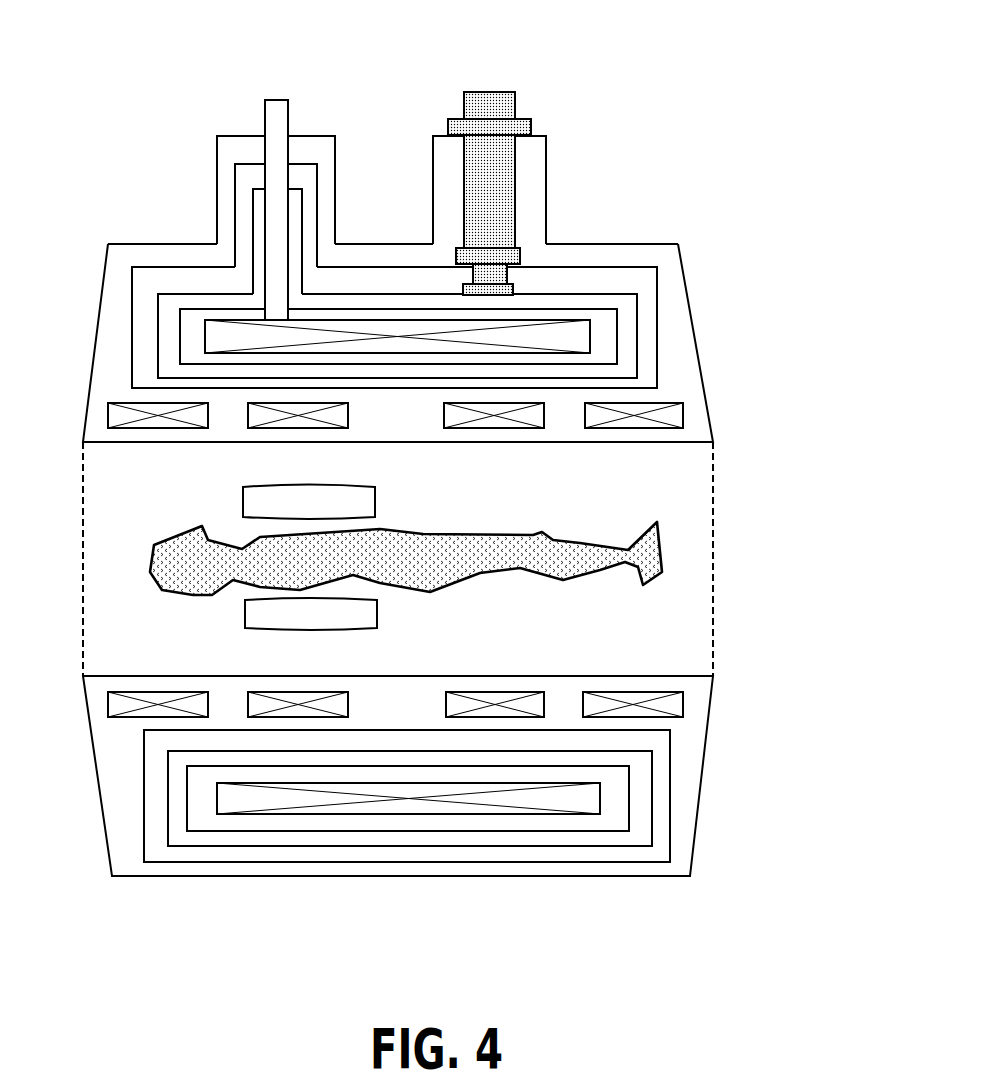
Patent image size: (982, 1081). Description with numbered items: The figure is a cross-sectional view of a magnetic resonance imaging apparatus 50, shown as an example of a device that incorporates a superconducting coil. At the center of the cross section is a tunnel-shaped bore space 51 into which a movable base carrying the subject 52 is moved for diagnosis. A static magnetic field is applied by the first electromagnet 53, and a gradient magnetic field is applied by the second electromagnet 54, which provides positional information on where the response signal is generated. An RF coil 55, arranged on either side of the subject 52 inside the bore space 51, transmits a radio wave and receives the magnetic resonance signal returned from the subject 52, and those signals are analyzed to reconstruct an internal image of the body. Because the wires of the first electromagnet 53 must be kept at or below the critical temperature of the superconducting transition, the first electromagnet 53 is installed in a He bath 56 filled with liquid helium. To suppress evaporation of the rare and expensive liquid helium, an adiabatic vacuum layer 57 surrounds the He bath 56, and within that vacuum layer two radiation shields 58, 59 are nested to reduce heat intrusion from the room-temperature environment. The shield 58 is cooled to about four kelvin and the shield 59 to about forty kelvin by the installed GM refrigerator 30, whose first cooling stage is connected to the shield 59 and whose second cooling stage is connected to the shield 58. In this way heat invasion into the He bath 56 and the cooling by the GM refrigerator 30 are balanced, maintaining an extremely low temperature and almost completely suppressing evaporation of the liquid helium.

The MRI apparatus 50 is at (145, 79).
The GM refrigerator 30 is at (517, 170).
The bore space 51 is at (157, 492).
The subject 52 is at (204, 527).
The first electromagnet 53 is at (590, 337).
The second electromagnet 54 is at (683, 417).
The RF coil 55 is at (375, 500).
The He bath 56 is at (603, 318).
The adiabatic vacuum layer 57 is at (627, 298).
The radiation shield 58 is at (394, 294).
The radiation shield 59 is at (350, 267).